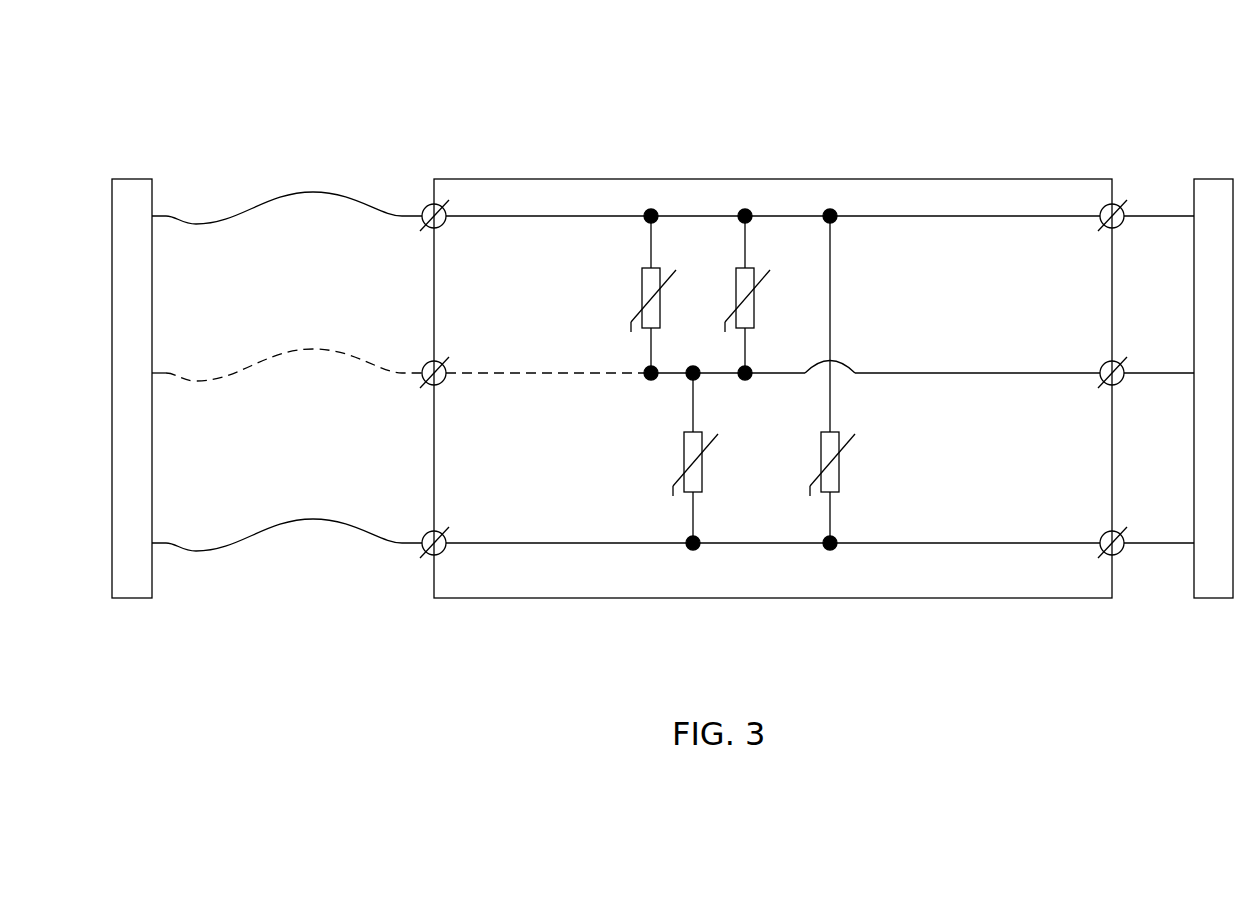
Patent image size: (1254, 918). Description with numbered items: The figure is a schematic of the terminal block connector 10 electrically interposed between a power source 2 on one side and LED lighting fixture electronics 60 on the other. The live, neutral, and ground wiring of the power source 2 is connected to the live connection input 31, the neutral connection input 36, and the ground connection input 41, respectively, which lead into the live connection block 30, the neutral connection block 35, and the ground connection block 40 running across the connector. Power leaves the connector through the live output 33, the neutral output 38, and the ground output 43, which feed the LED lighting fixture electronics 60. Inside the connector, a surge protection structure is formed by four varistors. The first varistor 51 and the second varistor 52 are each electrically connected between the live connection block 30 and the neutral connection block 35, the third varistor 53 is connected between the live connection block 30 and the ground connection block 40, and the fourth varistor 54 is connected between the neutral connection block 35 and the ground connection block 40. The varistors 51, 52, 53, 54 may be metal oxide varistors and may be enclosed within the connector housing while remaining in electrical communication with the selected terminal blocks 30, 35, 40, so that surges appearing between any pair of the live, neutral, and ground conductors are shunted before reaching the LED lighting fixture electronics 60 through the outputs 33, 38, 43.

The power source 2 is at (139, 397).
The terminal block connector 10 is at (879, 112).
The live connection block 30 is at (597, 216).
The live connection input 31 is at (428, 208).
The live output 33 is at (1115, 207).
The neutral connection block 35 is at (937, 373).
The neutral connection input 36 is at (428, 365).
The neutral output 38 is at (1114, 366).
The ground connection block 40 is at (898, 545).
The ground connection input 41 is at (428, 535).
The ground output 43 is at (1114, 535).
The first varistor 51 is at (648, 290).
The second varistor 52 is at (752, 305).
The third varistor 53 is at (835, 470).
The fourth varistor 54 is at (698, 470).
The LED lighting fixture electronics 60 is at (1228, 397).